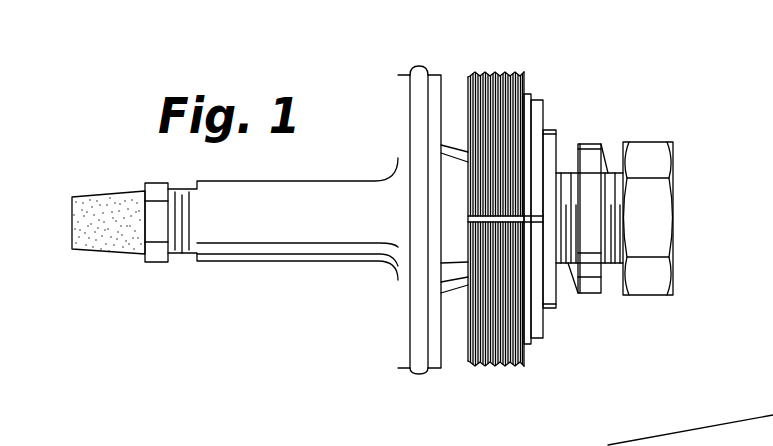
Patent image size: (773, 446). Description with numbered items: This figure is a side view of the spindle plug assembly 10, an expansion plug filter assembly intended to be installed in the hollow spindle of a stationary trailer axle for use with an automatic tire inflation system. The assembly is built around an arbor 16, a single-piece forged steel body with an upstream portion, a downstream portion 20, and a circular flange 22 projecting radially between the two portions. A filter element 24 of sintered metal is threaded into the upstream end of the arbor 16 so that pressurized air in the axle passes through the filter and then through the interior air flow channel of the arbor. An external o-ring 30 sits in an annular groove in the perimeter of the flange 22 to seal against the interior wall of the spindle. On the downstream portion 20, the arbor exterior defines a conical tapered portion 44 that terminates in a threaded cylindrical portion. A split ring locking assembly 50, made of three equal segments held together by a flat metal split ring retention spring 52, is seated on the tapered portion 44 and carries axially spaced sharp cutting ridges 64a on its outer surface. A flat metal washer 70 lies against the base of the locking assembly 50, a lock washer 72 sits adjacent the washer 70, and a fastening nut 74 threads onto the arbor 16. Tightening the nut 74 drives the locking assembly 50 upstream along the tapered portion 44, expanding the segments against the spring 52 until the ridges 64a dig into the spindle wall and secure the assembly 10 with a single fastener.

The spindle plug assembly 10 is at (177, 305).
The arbor 16 is at (325, 263).
The downstream portion 20 is at (610, 265).
The circular flange 22 is at (398, 326).
The filter element 24 is at (155, 263).
The external o-ring 30 is at (418, 374).
The tapered portion 44 is at (457, 163).
The split ring locking assembly 50 is at (546, 345).
The split ring retention spring 52 is at (528, 94).
The sharp cutting ridges 64a is at (481, 367).
The flat metal washer 70 is at (550, 130).
The lock washer 72 is at (597, 145).
The fastening nut 74 is at (653, 277).